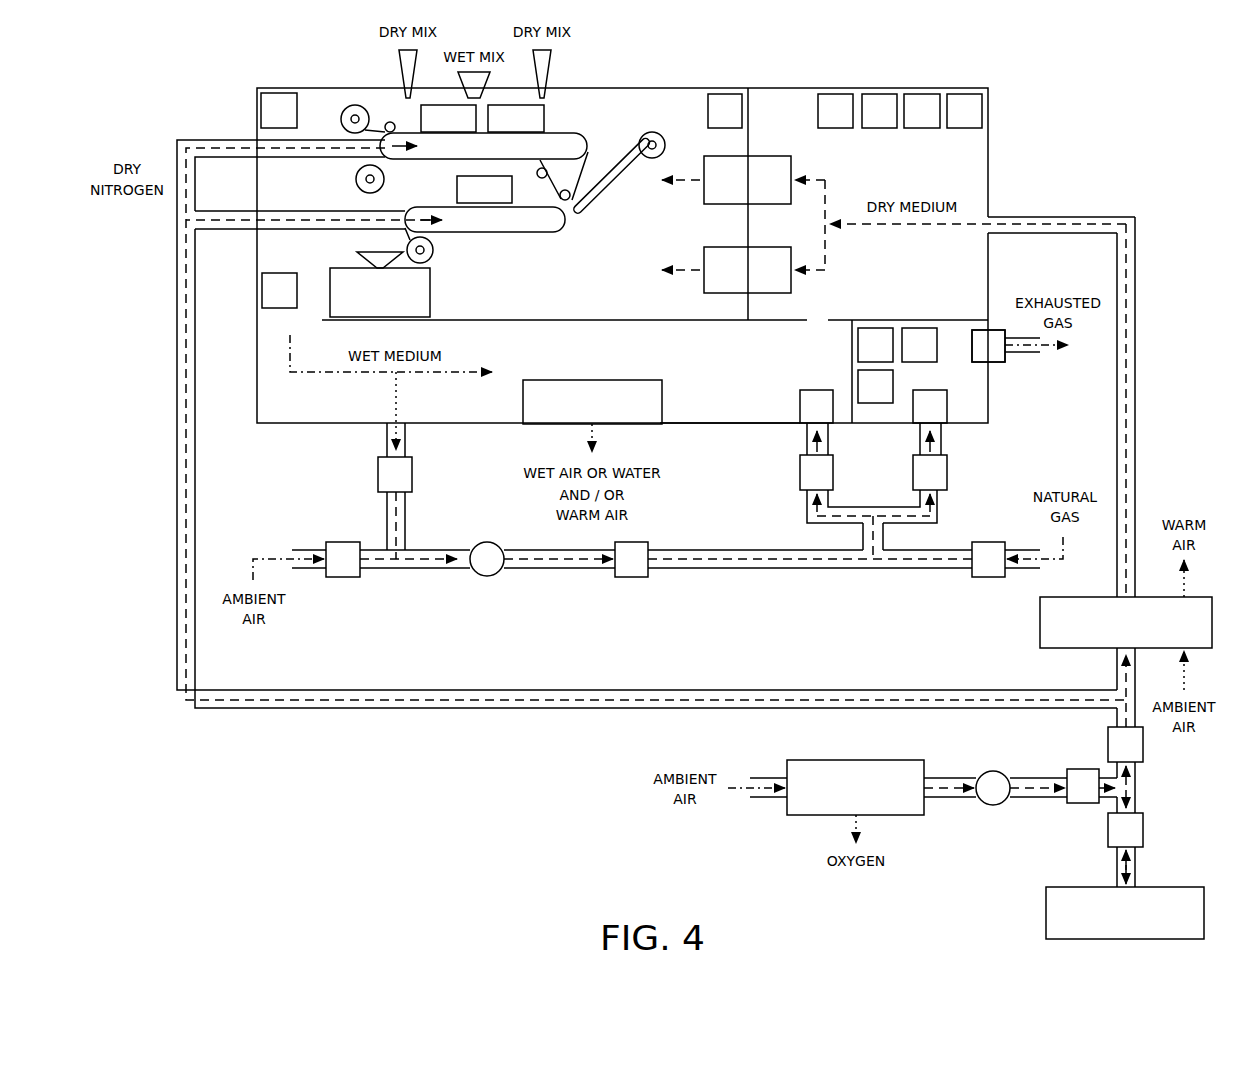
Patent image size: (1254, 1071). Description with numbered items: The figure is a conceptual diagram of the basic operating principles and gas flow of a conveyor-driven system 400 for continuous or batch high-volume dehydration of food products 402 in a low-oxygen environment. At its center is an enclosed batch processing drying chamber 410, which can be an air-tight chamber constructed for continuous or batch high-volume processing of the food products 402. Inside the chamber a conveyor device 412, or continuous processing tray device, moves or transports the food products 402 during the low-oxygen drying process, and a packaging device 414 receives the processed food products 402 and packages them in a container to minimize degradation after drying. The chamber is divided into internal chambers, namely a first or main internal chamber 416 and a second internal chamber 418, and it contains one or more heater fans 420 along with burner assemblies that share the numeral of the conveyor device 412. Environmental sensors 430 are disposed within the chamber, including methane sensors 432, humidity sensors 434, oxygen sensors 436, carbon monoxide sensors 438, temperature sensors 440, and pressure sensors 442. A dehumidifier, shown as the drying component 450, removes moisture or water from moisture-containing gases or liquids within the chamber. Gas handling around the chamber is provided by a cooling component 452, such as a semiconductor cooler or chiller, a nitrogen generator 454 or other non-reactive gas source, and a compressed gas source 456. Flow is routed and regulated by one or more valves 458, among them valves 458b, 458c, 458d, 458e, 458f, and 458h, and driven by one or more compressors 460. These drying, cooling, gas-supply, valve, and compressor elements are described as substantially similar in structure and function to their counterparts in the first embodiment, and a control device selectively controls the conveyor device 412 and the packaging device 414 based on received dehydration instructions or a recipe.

The system 400 is at (1163, 76).
The food products 402 is at (482, 154).
The enclosed batch processing drying chamber 410 is at (990, 161).
The conveyor device 412 is at (582, 232).
The packaging device 414 is at (430, 294).
The first internal chamber 416 is at (718, 403).
The second internal chamber 418 is at (958, 338).
The heater fan 420 is at (766, 156).
The environmental sensors 430 is at (998, 117).
The methane sensor 432 is at (835, 128).
The humidity sensor 434 is at (878, 128).
The oxygen sensor 436 is at (920, 128).
The carbon monoxide sensor 438 is at (964, 128).
The temperature sensor 440 is at (708, 110).
The pressure sensor 442 is at (261, 110).
The dehumidifier 450 is at (592, 380).
The cooling component 452 is at (1040, 624).
The nitrogen generator 454 is at (856, 760).
The compressed gas source 456 is at (1046, 912).
The valves 458 is at (376, 476).
The valve 458b is at (1083, 803).
The valve 458c is at (1108, 748).
The valve 458d is at (800, 474).
The valve 458e is at (947, 474).
The valve 458f is at (990, 362).
The valve 458h is at (1143, 834).
The compressor 460 is at (487, 542).